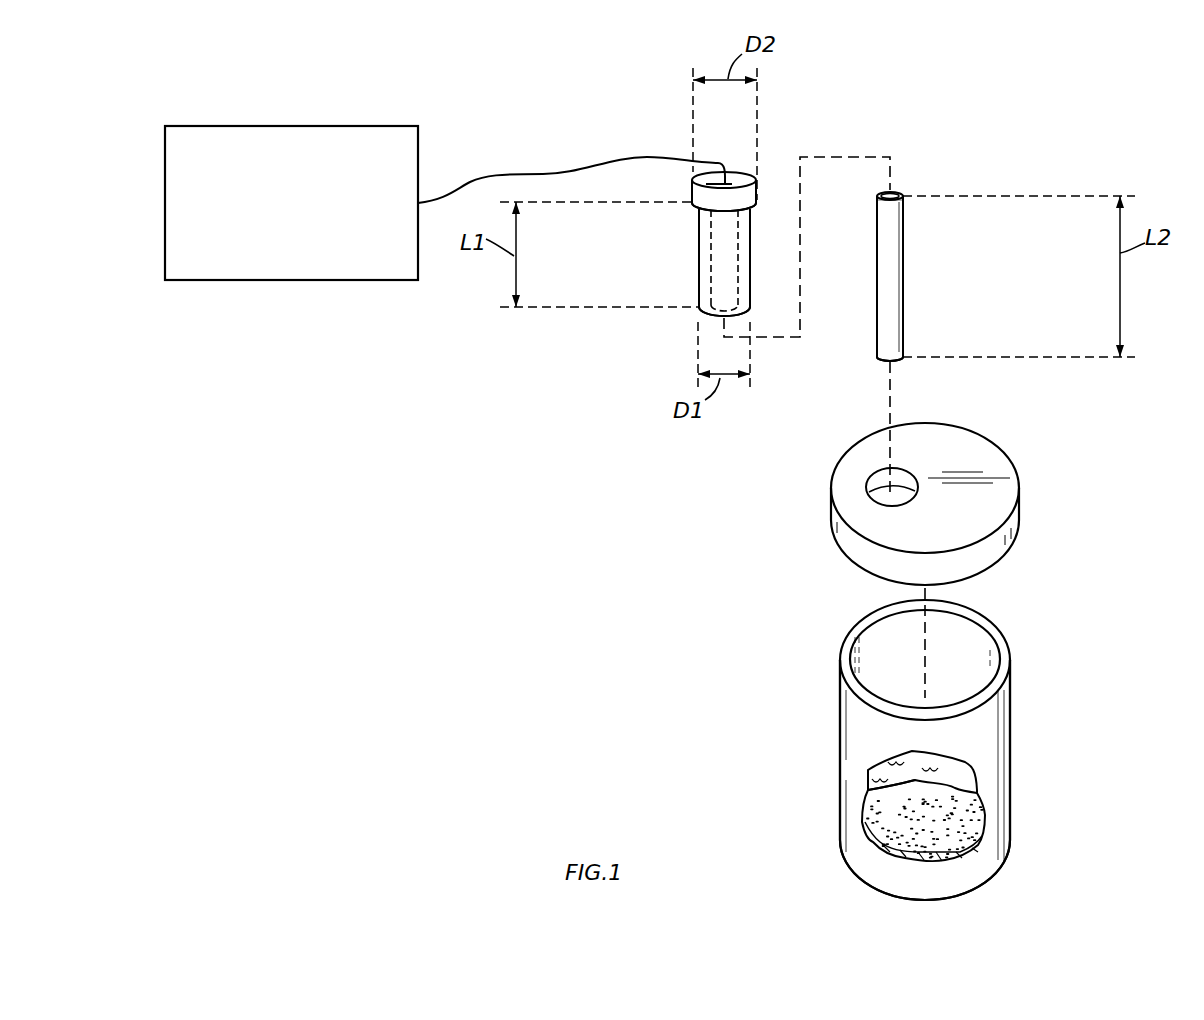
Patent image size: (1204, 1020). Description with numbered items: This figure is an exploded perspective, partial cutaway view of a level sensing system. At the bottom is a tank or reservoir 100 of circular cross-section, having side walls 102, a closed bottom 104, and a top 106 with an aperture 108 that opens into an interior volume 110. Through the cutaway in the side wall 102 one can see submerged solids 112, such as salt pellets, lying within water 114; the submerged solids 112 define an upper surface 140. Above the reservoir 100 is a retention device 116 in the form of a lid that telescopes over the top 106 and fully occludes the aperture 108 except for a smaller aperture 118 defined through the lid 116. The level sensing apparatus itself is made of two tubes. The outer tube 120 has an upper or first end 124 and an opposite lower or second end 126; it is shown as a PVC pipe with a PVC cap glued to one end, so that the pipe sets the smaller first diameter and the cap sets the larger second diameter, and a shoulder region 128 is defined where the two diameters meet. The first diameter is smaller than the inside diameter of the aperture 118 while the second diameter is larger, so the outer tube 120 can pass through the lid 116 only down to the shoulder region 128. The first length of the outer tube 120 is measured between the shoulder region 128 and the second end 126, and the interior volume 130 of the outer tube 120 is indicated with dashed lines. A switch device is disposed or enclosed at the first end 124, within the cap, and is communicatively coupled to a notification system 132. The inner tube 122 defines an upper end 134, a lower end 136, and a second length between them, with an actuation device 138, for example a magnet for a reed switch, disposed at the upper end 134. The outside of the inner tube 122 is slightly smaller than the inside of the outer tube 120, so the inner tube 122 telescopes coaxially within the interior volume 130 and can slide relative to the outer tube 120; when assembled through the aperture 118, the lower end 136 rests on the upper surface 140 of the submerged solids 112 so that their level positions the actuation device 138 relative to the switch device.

The reservoir 100 is at (768, 659).
The side walls 102 is at (838, 708).
The closed bottom 104 is at (1003, 873).
The top 106 is at (1012, 651).
The aperture 108 is at (987, 622).
The interior volume 110 is at (876, 650).
The submerged solids 112 is at (953, 815).
The water 114 is at (958, 772).
The retention device 116 is at (985, 450).
The aperture 118 is at (867, 478).
The outer tube 120 is at (699, 252).
The inner tube 122 is at (905, 240).
The first end 124 is at (759, 187).
The second end 126 is at (691, 314).
The shoulder region 128 is at (690, 214).
The interior volume 130 is at (725, 268).
The notification system 132 is at (303, 244).
The upper end 134 is at (906, 170).
The lower end 136 is at (875, 359).
The actuation device 138 is at (906, 189).
The upper surface 140 is at (893, 787).